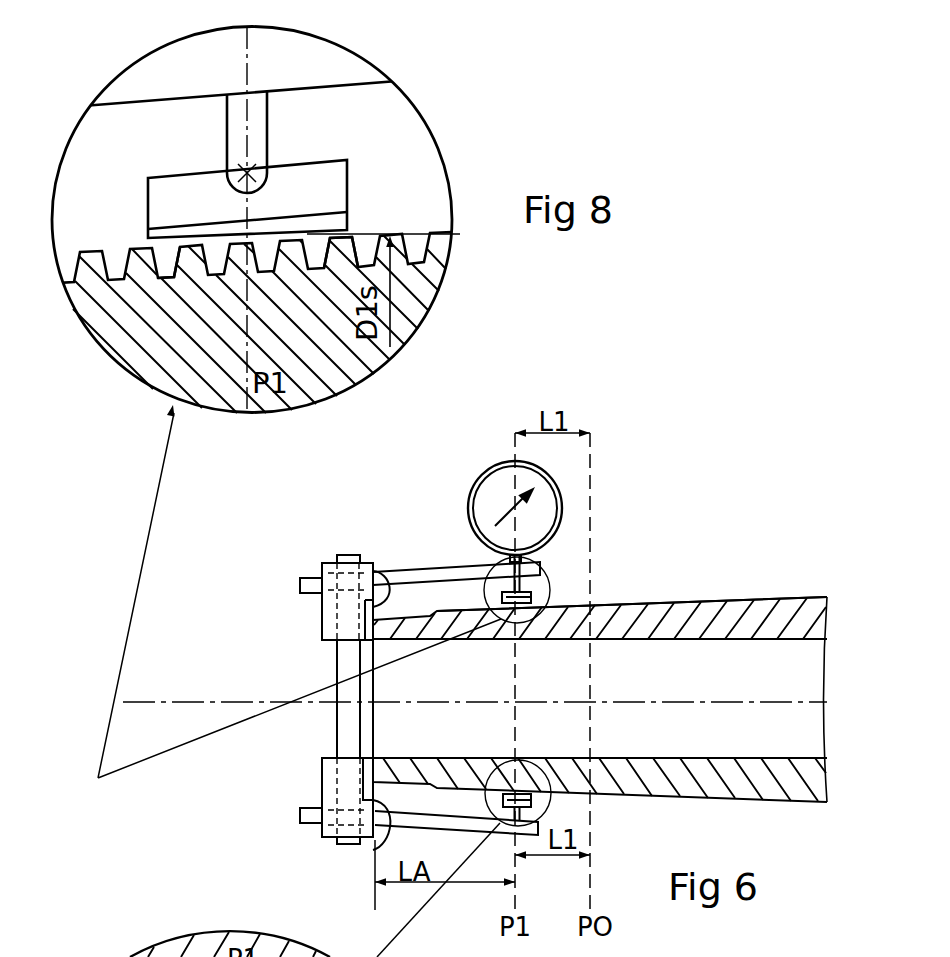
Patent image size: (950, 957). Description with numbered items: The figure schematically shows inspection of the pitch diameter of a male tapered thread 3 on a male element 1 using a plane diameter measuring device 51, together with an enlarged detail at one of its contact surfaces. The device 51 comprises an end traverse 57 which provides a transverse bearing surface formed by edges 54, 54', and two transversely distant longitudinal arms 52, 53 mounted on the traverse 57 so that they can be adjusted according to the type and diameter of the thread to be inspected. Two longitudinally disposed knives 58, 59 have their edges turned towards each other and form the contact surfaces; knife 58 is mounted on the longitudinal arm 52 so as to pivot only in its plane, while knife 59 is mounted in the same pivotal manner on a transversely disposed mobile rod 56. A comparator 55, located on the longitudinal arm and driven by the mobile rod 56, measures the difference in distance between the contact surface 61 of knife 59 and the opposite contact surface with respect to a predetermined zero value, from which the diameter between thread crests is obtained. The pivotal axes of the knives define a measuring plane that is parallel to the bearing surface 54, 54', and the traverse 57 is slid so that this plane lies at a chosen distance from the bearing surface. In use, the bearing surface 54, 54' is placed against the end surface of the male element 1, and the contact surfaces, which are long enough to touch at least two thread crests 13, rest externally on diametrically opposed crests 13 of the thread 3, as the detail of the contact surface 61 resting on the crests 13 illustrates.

In FIG. 6, the male element 1 is at (698, 570).
In FIG. 8, the male tapered thread 3 is at (419, 223).
In FIG. 6, the male tapered thread 3 is at (602, 600).
In FIG. 8, the thread crests 13 is at (347, 243).
In FIG. 6, the plane diameter measuring device 51 is at (337, 540).
In FIG. 6, the longitudinal arm 52 is at (473, 826).
In FIG. 6, the longitudinal arm 53 is at (445, 567).
In FIG. 6, the edge of transverse bearing surface 54 is at (330, 829).
In FIG. 6, the edge of transverse bearing surface 54' is at (347, 565).
In FIG. 6, the comparator 55 is at (480, 477).
In FIG. 8, the mobile rod 56 is at (240, 117).
In FIG. 6, the mobile rod 56 is at (493, 582).
In FIG. 6, the end traverse 57 is at (350, 662).
In FIG. 6, the knife 58 is at (545, 809).
In FIG. 8, the knife 59 is at (162, 185).
In FIG. 6, the knife 59 is at (549, 588).
In FIG. 8, the contact surface 61 is at (170, 250).